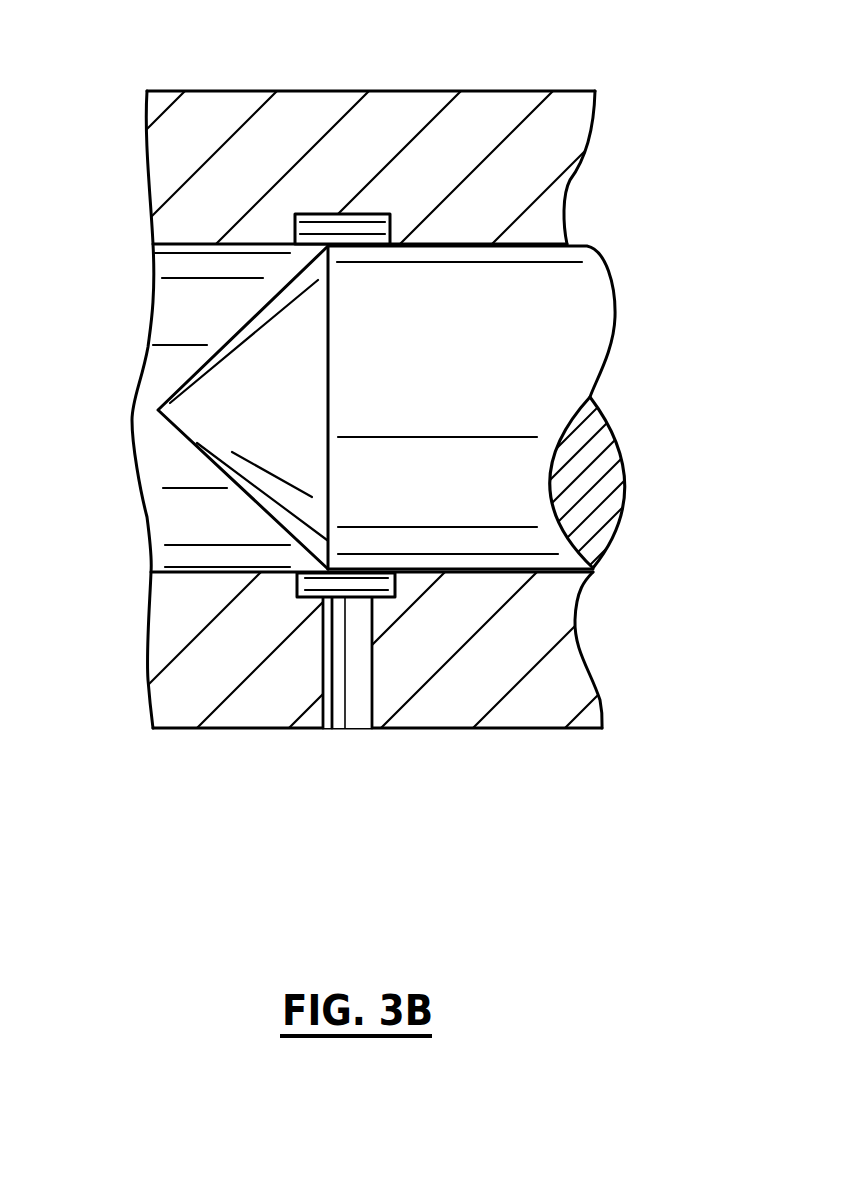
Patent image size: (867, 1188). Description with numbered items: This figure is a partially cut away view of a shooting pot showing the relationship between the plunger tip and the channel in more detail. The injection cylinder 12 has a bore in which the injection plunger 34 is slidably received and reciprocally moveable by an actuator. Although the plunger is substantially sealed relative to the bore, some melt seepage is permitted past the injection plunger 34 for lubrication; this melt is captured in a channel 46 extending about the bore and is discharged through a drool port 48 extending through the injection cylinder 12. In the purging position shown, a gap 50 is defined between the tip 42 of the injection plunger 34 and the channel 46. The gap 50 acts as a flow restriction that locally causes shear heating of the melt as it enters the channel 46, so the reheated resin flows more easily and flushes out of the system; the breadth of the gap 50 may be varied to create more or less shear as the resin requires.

The injection cylinder 12 is at (562, 125).
The injection plunger 34 is at (528, 392).
The tip 42 is at (187, 437).
The channel 46 is at (362, 213).
The drool port 48 is at (348, 705).
The gap 50 is at (287, 266).